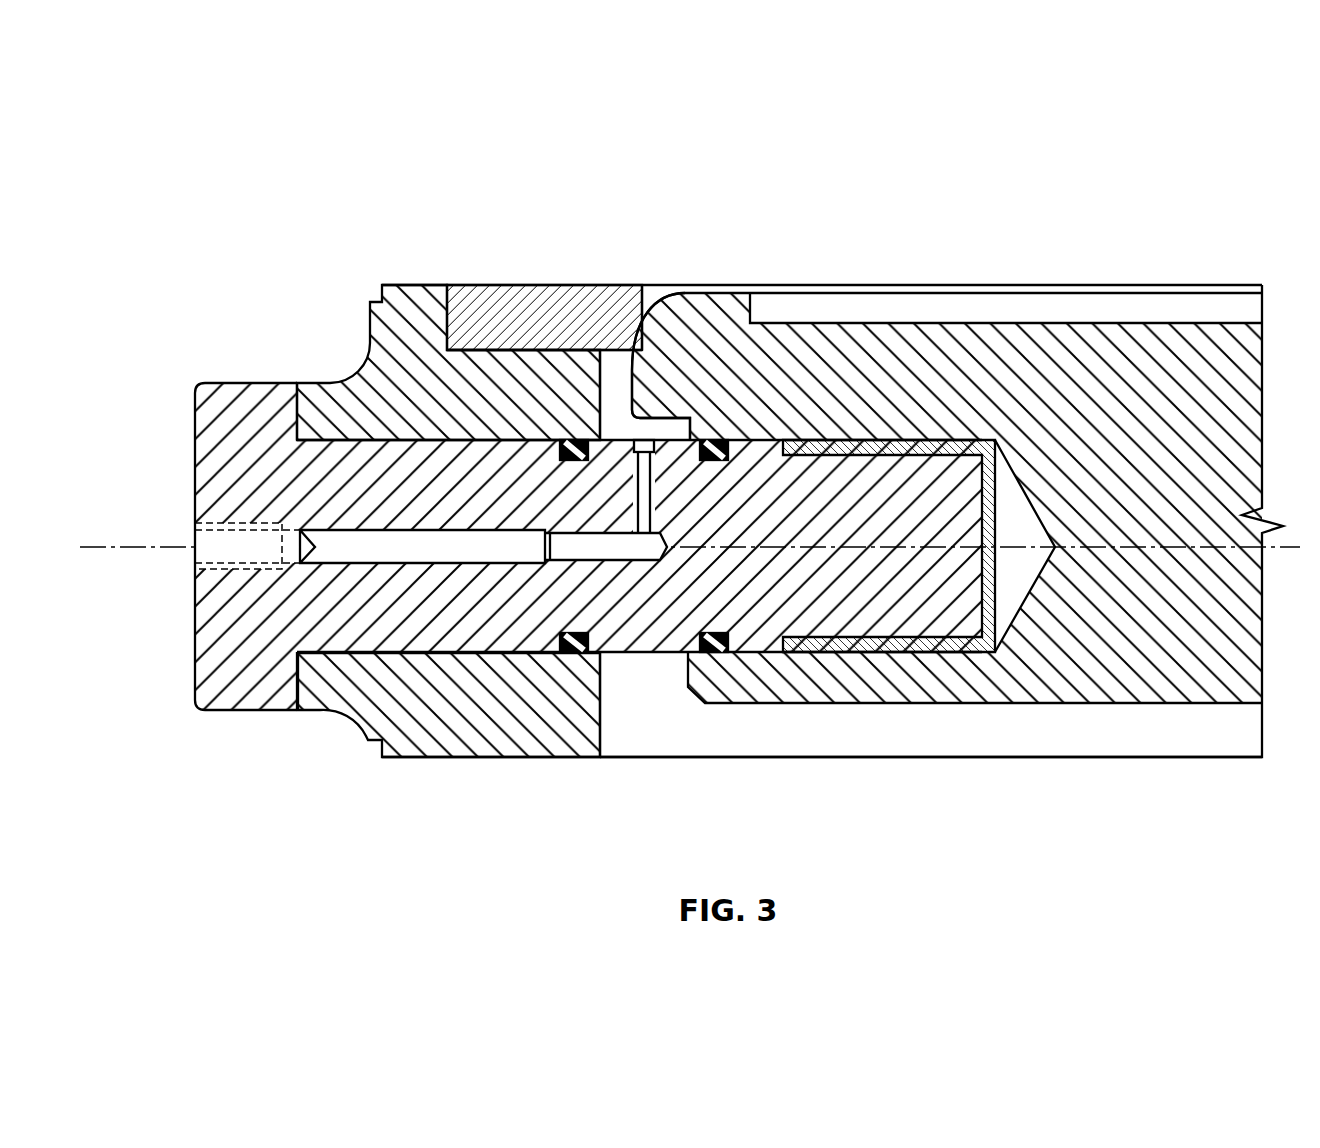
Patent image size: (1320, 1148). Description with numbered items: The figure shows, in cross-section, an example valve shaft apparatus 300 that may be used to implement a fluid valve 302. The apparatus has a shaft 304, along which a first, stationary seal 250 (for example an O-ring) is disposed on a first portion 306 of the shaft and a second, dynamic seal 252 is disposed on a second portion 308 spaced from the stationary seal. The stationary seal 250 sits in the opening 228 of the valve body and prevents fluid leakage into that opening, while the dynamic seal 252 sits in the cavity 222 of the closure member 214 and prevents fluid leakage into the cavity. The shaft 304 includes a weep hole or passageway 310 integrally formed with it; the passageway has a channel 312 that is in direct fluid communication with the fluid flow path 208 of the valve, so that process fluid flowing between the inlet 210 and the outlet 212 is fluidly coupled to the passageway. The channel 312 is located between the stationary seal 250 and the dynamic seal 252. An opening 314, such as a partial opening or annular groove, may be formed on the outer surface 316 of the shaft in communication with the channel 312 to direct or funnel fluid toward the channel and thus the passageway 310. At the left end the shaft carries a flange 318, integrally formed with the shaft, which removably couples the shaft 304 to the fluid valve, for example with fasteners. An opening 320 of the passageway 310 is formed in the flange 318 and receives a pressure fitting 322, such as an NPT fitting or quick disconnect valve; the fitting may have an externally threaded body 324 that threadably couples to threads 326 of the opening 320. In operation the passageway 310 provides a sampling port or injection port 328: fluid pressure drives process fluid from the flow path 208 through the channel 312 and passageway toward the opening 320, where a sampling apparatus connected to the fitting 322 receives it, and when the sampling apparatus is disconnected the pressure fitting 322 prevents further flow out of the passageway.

The valve shaft apparatus 300 is at (290, 290).
The fluid valve 302 is at (211, 107).
The shaft 304 is at (528, 622).
The first portion 306 is at (348, 622).
The second portion 308 is at (943, 613).
The passageway 310 is at (295, 622).
The channel 312 is at (642, 492).
The opening 314 is at (647, 490).
The outer surface 316 is at (556, 438).
The flange 318 is at (195, 668).
The opening 320 is at (290, 527).
The pressure fitting 322 is at (195, 556).
The externally threaded body 324 is at (218, 572).
The threads 326 is at (247, 570).
The sampling port and/or injection port 328 is at (175, 536).
The fluid flow path 208 is at (905, 737).
The inlet 210 is at (633, 385).
The outlet 212 is at (1105, 758).
The closure member 214 is at (1112, 343).
The cavity 222 is at (1036, 512).
The opening 228 is at (393, 440).
The stationary seal 250 is at (584, 650).
The dynamic seal 252 is at (711, 650).